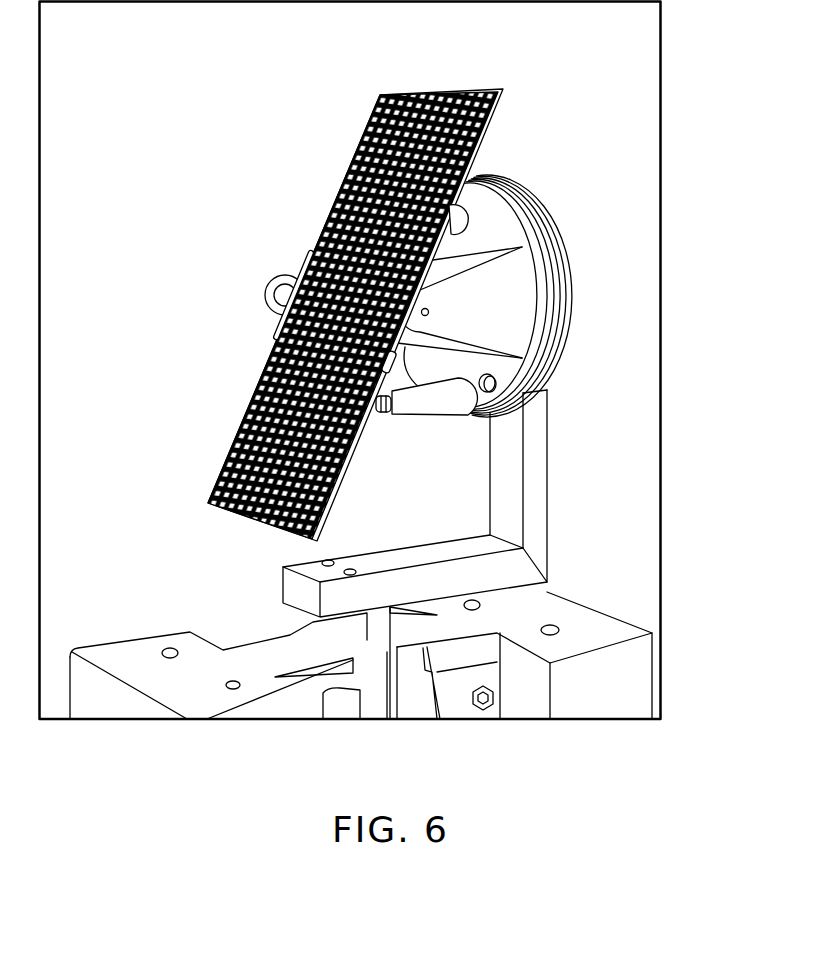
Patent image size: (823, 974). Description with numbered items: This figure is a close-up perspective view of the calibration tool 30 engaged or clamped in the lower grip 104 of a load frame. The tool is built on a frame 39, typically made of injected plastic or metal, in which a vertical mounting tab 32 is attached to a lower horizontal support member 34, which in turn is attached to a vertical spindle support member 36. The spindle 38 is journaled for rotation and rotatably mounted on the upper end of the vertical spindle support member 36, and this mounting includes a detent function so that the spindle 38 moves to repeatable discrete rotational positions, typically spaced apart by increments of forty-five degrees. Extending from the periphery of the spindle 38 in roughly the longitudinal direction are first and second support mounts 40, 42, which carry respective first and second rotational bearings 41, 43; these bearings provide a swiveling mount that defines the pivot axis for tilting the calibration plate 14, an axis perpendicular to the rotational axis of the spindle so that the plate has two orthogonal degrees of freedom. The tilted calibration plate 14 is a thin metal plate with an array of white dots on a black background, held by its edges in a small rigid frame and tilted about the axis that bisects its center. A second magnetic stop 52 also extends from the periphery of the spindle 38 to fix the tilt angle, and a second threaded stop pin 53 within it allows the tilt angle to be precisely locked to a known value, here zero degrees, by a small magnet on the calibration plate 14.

The calibration plate 14 is at (443, 93).
The calibration tool 30 is at (548, 490).
The vertical mounting tab 32 is at (380, 635).
The lower horizontal support member 34 is at (490, 573).
The vertical spindle support member 36 is at (538, 465).
The spindle 38 is at (537, 200).
The frame 39 is at (558, 423).
The first support mount 40 is at (265, 305).
The first rotational bearing 41 is at (266, 288).
The second support mount 42 is at (471, 297).
The second rotational bearing 43 is at (428, 312).
The second magnetic stop 52 is at (425, 410).
The second threaded stop pin 53 is at (373, 410).
The lower grip 104 is at (630, 690).